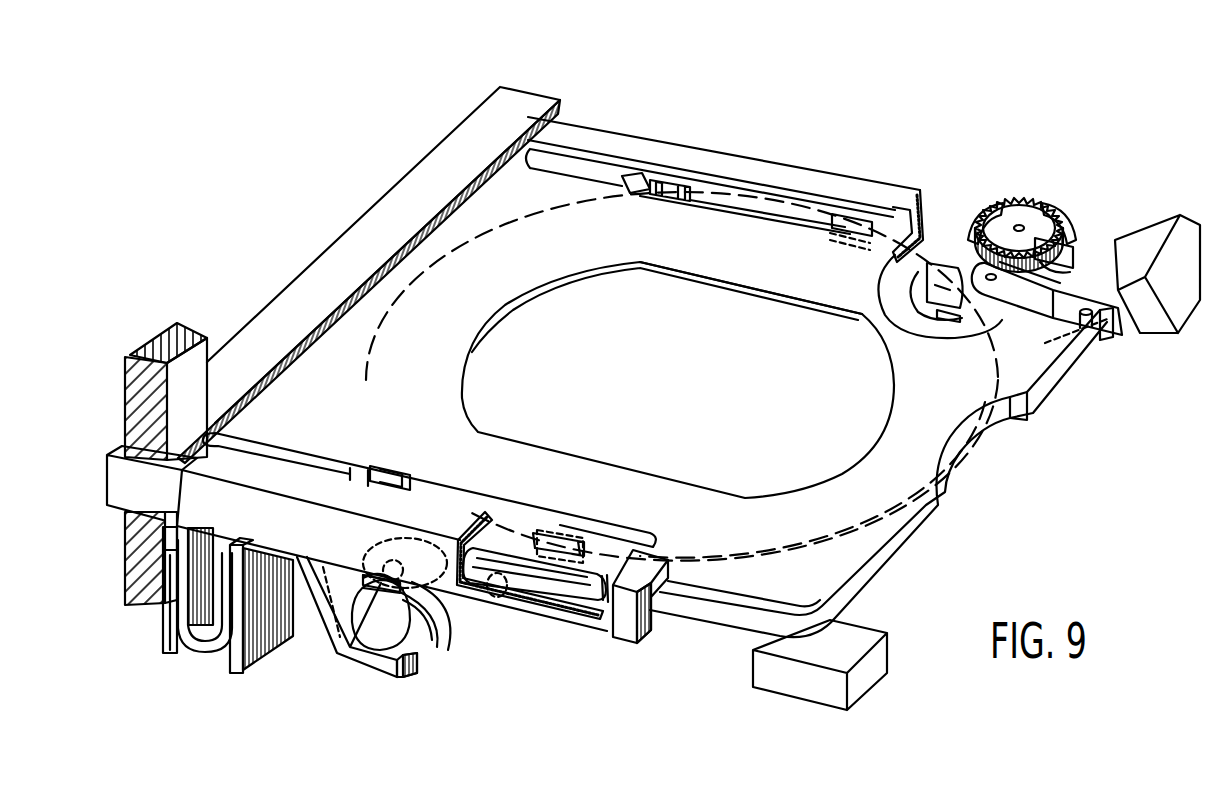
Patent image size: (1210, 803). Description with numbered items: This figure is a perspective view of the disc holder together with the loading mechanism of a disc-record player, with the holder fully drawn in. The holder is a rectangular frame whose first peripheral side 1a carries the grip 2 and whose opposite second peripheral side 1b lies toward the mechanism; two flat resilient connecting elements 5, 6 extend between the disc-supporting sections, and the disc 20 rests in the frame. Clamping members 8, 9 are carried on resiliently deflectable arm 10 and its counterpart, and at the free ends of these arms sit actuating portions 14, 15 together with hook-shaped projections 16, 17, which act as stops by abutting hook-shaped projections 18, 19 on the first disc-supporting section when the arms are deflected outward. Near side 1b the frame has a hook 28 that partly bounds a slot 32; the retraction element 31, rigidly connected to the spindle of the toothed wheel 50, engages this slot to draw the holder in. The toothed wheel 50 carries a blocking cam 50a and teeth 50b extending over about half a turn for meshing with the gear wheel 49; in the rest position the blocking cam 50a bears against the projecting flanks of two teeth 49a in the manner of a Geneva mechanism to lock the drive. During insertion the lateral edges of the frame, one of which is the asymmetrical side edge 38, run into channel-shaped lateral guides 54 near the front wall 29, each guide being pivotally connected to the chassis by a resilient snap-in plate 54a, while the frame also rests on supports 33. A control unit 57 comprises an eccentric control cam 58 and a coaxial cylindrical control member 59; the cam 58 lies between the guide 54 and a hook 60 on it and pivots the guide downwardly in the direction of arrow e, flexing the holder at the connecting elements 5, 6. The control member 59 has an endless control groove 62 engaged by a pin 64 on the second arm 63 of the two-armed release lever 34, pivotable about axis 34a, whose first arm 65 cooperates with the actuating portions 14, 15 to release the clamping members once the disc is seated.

The first peripheral side 1a is at (386, 197).
The second peripheral side 1b is at (1038, 402).
The grip 2 is at (290, 300).
The connecting element 5 is at (617, 468).
The connecting element 6 is at (770, 288).
The clamping member 8 is at (566, 480).
The clamping member 9 is at (843, 216).
The resiliently deflectable arm 10 is at (490, 540).
The actuating portion 14 is at (575, 590).
The actuating portion 15 is at (901, 196).
The hook-shaped projection 16 is at (388, 474).
The hook-shaped projection 17 is at (670, 200).
The hook-shaped projection 18 is at (363, 468).
The hook-shaped projection 19 is at (612, 180).
The disc 20 is at (760, 205).
The hook 28 is at (1097, 330).
The front wall 29 is at (132, 396).
The retraction element 31 is at (1016, 300).
The slot 32 is at (1118, 322).
The support 33 is at (1172, 238).
The release lever 34 is at (583, 612).
The axis 34a is at (500, 600).
The side edge 38 is at (682, 610).
The gear wheel 49 is at (1027, 204).
The teeth 49a is at (995, 205).
The toothed wheel 50 is at (955, 297).
The blocking cam 50a is at (878, 270).
The teeth 50b is at (1045, 257).
The lateral guide 54 is at (622, 140).
The resilient snap-in plate 54a is at (193, 640).
The control unit 57 is at (431, 650).
The control cam 58 is at (375, 640).
The cylindrical control member 59 is at (436, 644).
The hook 60 is at (332, 655).
The control groove 62 is at (441, 620).
The second arm 63 is at (462, 540).
The pin 64 is at (385, 562).
The first arm 65 is at (605, 605).
The arrow e is at (301, 674).